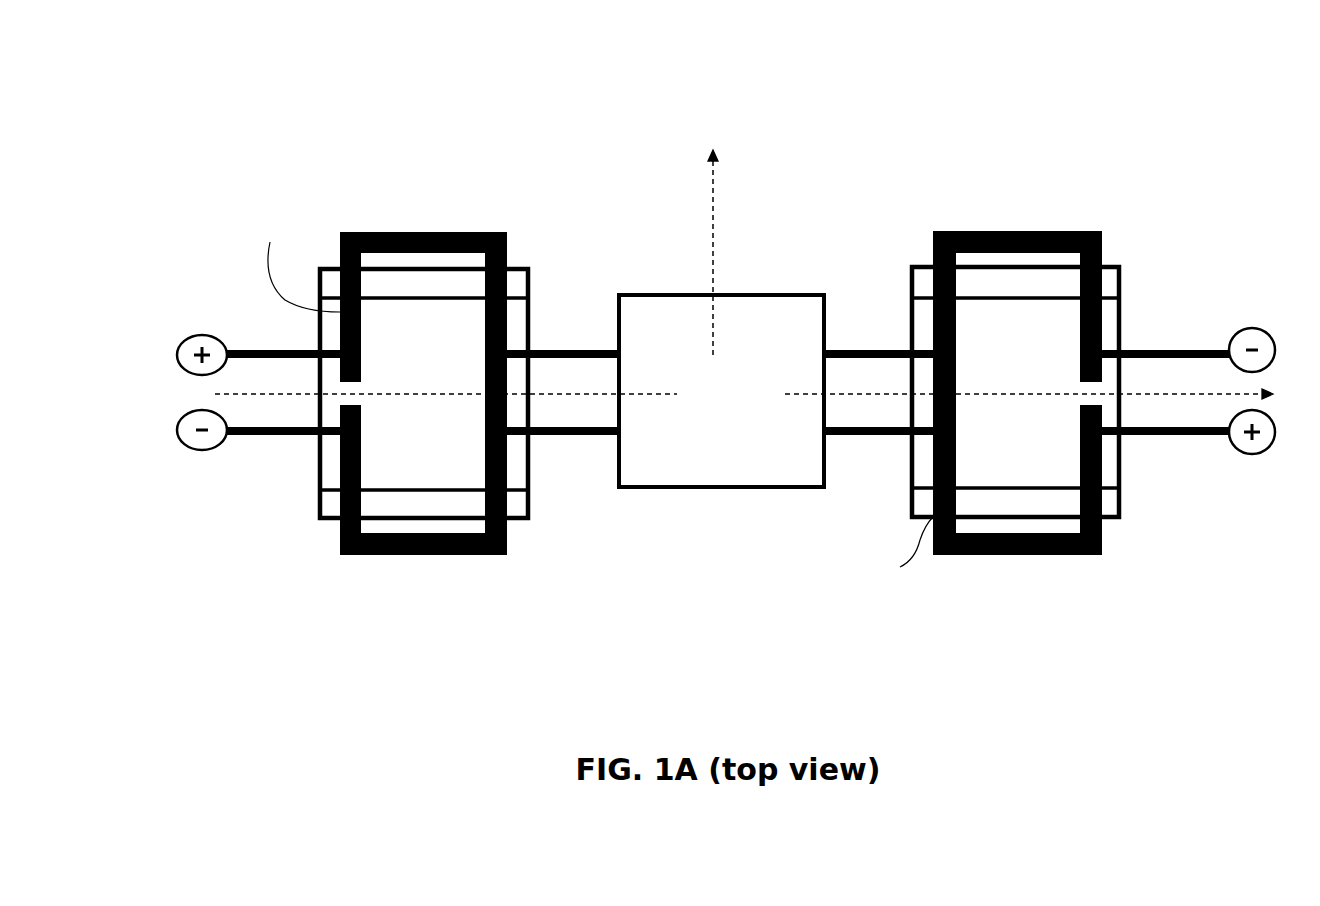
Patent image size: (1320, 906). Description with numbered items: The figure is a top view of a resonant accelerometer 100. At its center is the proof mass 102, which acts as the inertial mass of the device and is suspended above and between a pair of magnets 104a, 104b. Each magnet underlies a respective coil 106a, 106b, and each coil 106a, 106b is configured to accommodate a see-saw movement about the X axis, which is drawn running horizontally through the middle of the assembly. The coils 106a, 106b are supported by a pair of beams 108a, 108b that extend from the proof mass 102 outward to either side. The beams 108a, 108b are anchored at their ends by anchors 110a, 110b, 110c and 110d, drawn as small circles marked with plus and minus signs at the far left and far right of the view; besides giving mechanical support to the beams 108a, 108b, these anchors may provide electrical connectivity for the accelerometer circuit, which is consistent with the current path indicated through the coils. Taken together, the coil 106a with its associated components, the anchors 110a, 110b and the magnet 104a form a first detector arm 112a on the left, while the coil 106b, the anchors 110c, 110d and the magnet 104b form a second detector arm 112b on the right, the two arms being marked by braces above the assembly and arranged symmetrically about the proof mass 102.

The accelerometer 100 is at (741, 88).
The proof mass 102 is at (721, 391).
The magnet 104a is at (424, 394).
The magnet 104b is at (1015, 393).
The coil 106a is at (337, 540).
The coil 106b is at (1102, 548).
The beam 108a is at (558, 348).
The beam 108b is at (550, 436).
The anchor 110a is at (256, 326).
The anchor 110b is at (257, 457).
The anchor 110c is at (1192, 324).
The anchor 110d is at (1193, 460).
The first detector arm 112a is at (190, 182).
The second detector arm 112b is at (1240, 182).